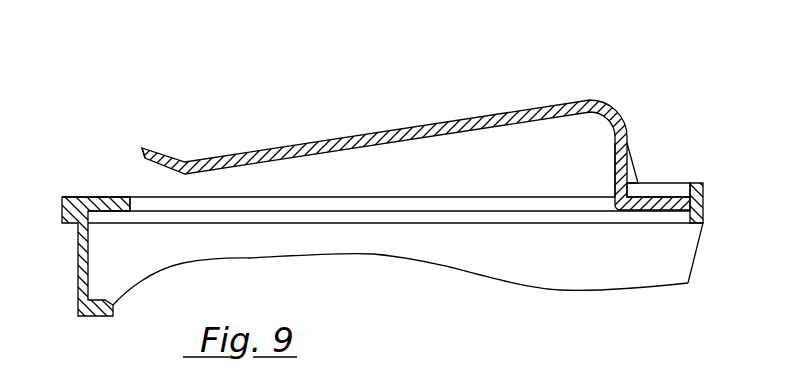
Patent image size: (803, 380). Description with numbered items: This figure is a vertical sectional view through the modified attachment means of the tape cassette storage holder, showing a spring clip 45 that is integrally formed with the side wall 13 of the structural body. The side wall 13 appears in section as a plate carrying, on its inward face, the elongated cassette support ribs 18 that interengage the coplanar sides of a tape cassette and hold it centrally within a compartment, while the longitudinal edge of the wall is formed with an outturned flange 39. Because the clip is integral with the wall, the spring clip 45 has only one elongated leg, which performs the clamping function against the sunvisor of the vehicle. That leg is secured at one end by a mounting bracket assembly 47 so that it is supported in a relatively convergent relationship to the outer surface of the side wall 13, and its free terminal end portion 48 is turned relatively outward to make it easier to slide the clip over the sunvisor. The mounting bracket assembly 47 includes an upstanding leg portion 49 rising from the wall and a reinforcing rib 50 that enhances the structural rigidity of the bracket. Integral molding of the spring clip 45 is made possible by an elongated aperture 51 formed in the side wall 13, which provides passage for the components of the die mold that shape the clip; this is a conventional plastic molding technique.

The side wall 13 is at (90, 196).
The cassette support ribs 18 is at (451, 221).
The outturned flange 39 is at (703, 190).
The spring clip 45 is at (498, 110).
The mounting bracket assembly 47 is at (646, 142).
The terminal end portion 48 is at (160, 155).
The upstanding leg portion 49 is at (616, 157).
The reinforcing rib 50 is at (653, 188).
The elongated aperture 51 is at (407, 183).